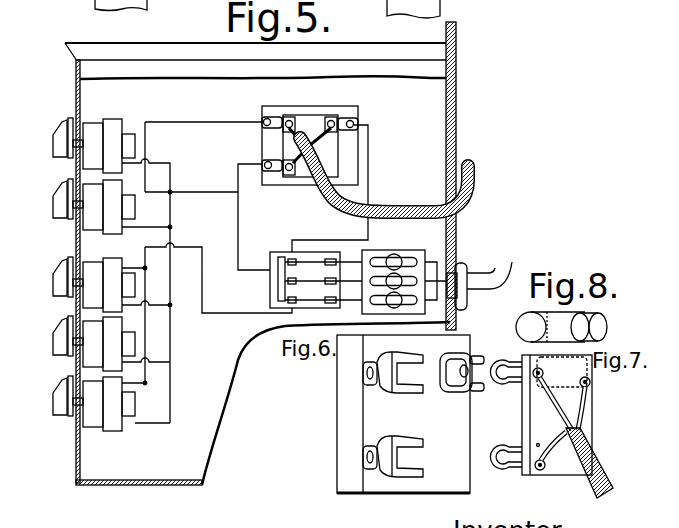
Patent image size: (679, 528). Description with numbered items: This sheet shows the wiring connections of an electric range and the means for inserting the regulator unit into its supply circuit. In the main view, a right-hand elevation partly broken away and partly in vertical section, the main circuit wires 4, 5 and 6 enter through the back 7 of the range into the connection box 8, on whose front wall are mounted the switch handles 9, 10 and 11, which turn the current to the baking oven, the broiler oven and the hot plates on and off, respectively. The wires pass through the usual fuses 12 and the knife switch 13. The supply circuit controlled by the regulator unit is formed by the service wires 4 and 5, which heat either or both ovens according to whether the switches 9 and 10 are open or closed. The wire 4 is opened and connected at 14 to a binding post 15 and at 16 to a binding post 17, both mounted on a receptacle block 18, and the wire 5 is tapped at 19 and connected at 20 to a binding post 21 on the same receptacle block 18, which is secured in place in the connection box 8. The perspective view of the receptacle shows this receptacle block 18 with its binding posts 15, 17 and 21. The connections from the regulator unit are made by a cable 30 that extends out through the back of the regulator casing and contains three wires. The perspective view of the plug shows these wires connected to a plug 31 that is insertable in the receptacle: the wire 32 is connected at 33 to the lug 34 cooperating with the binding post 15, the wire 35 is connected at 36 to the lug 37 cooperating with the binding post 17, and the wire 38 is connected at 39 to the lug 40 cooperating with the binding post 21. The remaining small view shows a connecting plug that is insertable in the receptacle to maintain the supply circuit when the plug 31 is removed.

In FIG. 5, the main circuit wire 4 is at (476, 267).
In FIG. 5, the main circuit wire 5 is at (497, 262).
In FIG. 5, the main circuit wire 6 is at (506, 265).
In FIG. 5, the back 7 is at (457, 124).
In FIG. 5, the connection box 8 is at (428, 105).
In FIG. 5, the switch handle 9 is at (55, 128).
In FIG. 5, the switch handle 10 is at (57, 183).
In FIG. 5, the switch handle 11 is at (57, 380).
In FIG. 5, the fuses 12 is at (397, 258).
In FIG. 5, the knife switch 13 is at (256, 277).
In FIG. 5, the connection point 14 is at (354, 124).
In FIG. 6, the connection point 14 is at (453, 353).
In FIG. 6, the binding post 15 is at (478, 357).
In FIG. 5, the connection point 16 is at (262, 120).
In FIG. 6, the connection point 16 is at (363, 372).
In FIG. 6, the binding post 17 is at (412, 391).
In FIG. 6, the receptacle block 18 is at (437, 484).
In FIG. 5, the tap 19 is at (238, 190).
In FIG. 5, the connection point 20 is at (264, 163).
In FIG. 6, the connection point 20 is at (363, 452).
In FIG. 6, the binding post 21 is at (418, 447).
In FIG. 5, the cable 30 is at (384, 205).
In FIG. 7, the cable 30 is at (600, 462).
In FIG. 7, the plug 31 is at (587, 418).
In FIG. 5, the wire 32 is at (318, 122).
In FIG. 7, the wire 32 is at (580, 402).
In FIG. 7, the connection point 33 is at (590, 383).
In FIG. 8, the lug 34 is at (605, 327).
In FIG. 5, the wire 35 is at (292, 122).
In FIG. 7, the wire 35 is at (556, 403).
In FIG. 7, the connection point 36 is at (537, 380).
In FIG. 7, the lug 37 is at (516, 358).
In FIG. 5, the wire 38 is at (300, 156).
In FIG. 7, the wire 38 is at (555, 441).
In FIG. 7, the connection point 39 is at (534, 472).
In FIG. 7, the lug 40 is at (496, 468).